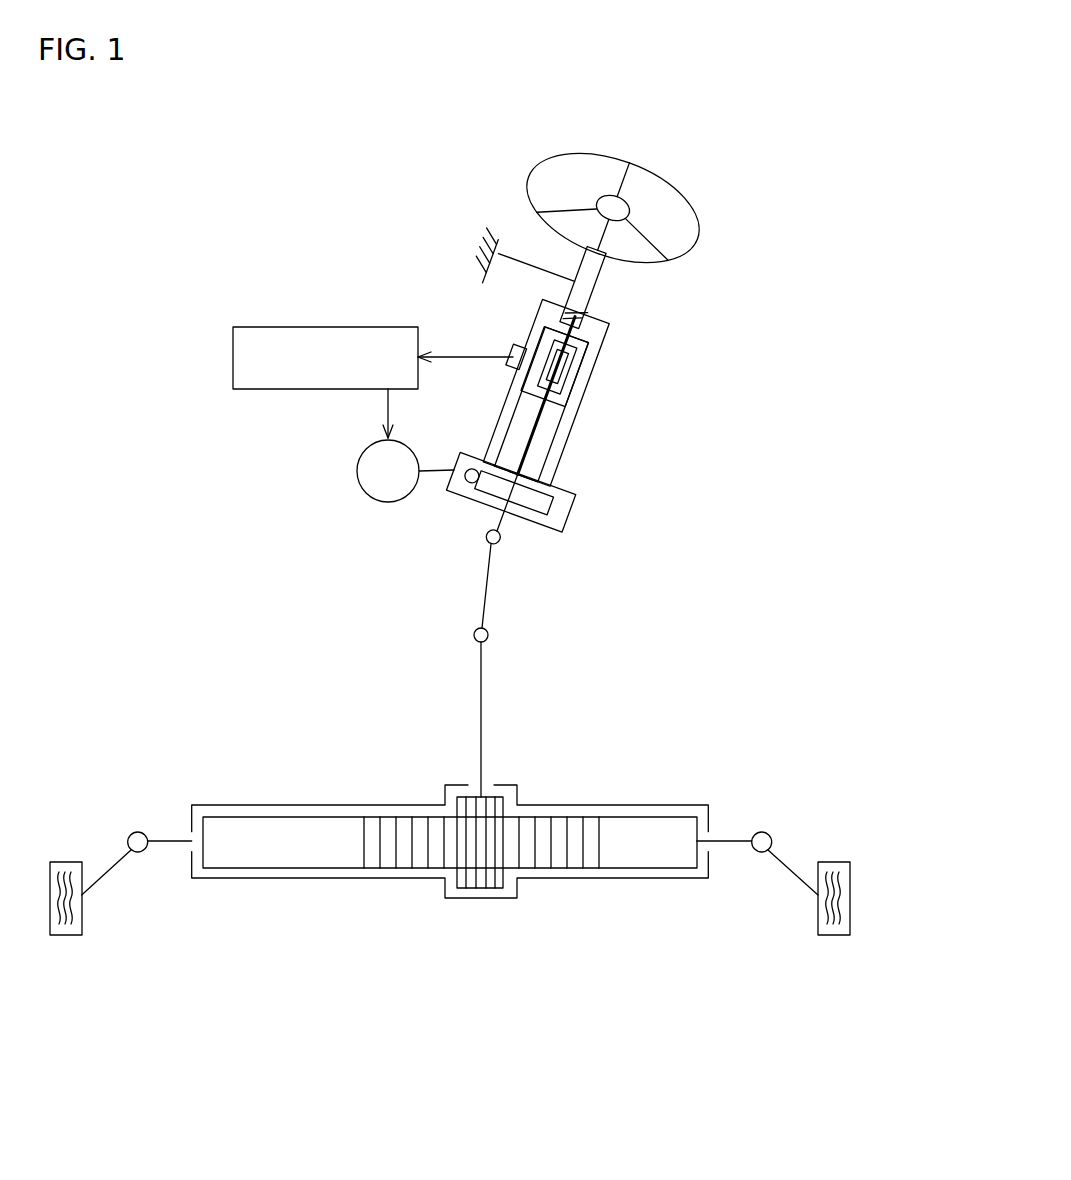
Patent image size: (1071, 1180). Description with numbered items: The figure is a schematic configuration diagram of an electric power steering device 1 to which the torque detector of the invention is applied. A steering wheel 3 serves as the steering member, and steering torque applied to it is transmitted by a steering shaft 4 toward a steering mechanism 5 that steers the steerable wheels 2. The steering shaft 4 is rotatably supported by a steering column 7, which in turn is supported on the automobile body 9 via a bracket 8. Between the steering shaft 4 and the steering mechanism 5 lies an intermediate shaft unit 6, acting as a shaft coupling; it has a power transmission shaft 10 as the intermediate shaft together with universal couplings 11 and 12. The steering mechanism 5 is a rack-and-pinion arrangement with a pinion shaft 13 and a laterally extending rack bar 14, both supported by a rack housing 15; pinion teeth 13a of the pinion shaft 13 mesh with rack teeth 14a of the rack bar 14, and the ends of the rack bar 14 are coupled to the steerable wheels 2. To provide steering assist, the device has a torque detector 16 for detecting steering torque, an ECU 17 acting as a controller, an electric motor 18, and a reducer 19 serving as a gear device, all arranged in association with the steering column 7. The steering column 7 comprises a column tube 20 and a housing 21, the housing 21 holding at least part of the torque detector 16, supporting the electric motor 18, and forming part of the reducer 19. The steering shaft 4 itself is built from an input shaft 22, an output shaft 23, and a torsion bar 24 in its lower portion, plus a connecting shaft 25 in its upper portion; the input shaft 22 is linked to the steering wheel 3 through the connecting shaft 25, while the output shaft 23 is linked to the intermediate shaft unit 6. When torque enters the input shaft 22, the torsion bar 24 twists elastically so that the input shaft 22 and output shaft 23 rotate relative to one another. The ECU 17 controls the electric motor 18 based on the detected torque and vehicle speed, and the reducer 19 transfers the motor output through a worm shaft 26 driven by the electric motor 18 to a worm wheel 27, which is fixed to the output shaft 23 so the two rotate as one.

The electric power steering device 1 is at (723, 157).
The steerable wheels 2 is at (65, 935).
The steering wheel 3 is at (602, 158).
The steering shaft 4 is at (592, 277).
The steering mechanism 5 is at (450, 870).
The intermediate shaft unit 6 is at (566, 609).
The steering column 7 is at (573, 428).
The bracket 8 is at (520, 254).
The automobile body 9 is at (487, 288).
The power transmission shaft 10 is at (487, 594).
The universal coupling 11 is at (502, 537).
The universal coupling 12 is at (489, 637).
The pinion shaft 13 is at (483, 745).
The pinion teeth 13a is at (473, 887).
The rack bar 14 is at (450, 884).
The rack teeth 14a is at (419, 860).
The rack housing 15 is at (345, 804).
The torque detector 16 is at (512, 352).
The ECU 17 is at (263, 327).
The electric motor 18 is at (388, 502).
The reducer 19 is at (557, 523).
The column tube 20 is at (602, 306).
The housing 21 is at (462, 448).
The input shaft 22 is at (584, 356).
The output shaft 23 is at (530, 448).
The torsion bar 24 is at (562, 395).
The connecting shaft 25 is at (590, 322).
The worm shaft 26 is at (467, 493).
The worm wheel 27 is at (572, 516).